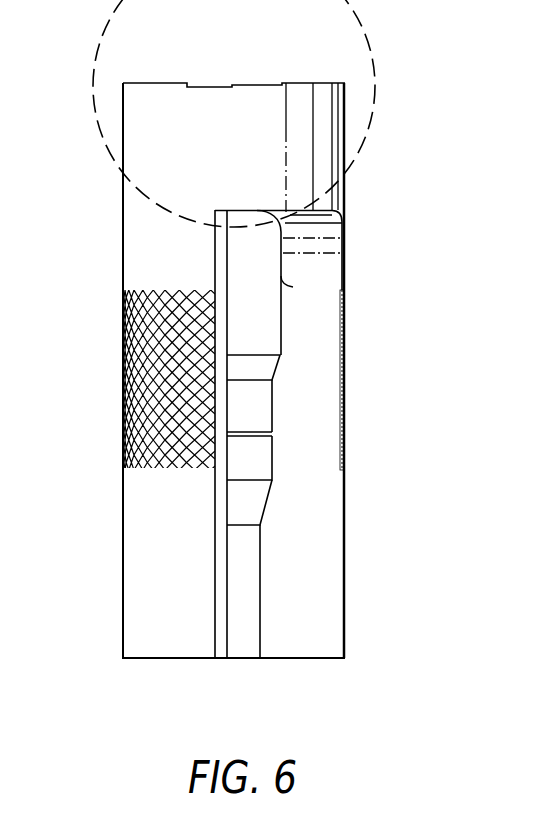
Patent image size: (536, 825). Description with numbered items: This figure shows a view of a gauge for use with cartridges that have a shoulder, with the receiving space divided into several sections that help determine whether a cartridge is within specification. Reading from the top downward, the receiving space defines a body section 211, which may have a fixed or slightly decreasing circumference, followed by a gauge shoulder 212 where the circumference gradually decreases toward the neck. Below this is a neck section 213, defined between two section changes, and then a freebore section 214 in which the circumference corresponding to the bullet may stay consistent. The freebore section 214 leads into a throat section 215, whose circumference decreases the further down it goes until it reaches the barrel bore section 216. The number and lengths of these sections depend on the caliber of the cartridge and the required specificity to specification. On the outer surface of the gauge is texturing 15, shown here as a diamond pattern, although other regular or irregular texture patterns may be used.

The texturing 15 is at (122, 372).
The body section 211 is at (298, 285).
The gauge shoulder 212 is at (293, 287).
The neck section 213 is at (284, 431).
The freebore section 214 is at (277, 433).
The throat section 215 is at (277, 526).
The barrel bore section 216 is at (265, 656).